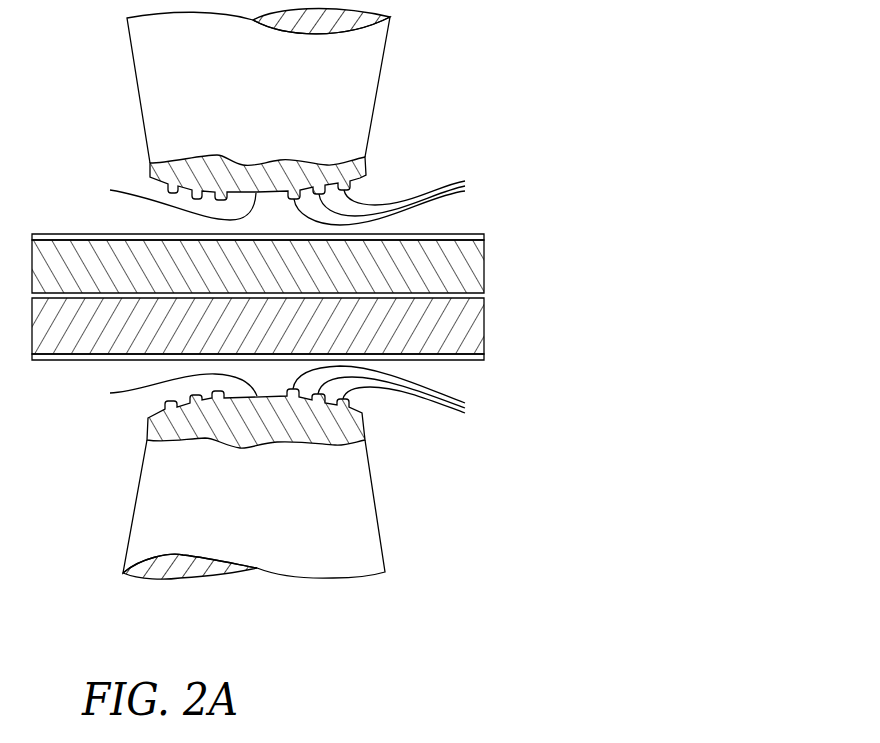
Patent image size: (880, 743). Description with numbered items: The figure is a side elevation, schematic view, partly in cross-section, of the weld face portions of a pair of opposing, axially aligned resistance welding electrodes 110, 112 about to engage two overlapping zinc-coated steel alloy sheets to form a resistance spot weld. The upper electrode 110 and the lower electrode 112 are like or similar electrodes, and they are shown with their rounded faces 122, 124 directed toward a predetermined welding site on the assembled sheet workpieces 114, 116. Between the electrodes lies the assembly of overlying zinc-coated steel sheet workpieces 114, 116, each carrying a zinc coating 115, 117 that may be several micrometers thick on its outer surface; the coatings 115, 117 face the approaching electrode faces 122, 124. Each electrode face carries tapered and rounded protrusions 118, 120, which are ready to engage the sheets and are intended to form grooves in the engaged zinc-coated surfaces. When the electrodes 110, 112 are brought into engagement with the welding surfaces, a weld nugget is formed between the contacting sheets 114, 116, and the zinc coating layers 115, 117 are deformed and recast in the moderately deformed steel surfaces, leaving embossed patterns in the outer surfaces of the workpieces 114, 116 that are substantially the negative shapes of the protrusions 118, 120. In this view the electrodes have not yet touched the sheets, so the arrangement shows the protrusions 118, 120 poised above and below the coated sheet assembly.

The welding electrode 110 is at (278, 118).
The welding electrode 112 is at (276, 497).
The zinc-coated steel sheet workpiece 114 is at (466, 262).
The zinc coating 115 is at (440, 234).
The zinc-coated steel sheet workpiece 116 is at (467, 320).
The zinc coating 117 is at (448, 357).
The protrusions 118 is at (399, 198).
The protrusions 120 is at (398, 392).
The rounded face 122 is at (110, 190).
The rounded face 124 is at (114, 393).